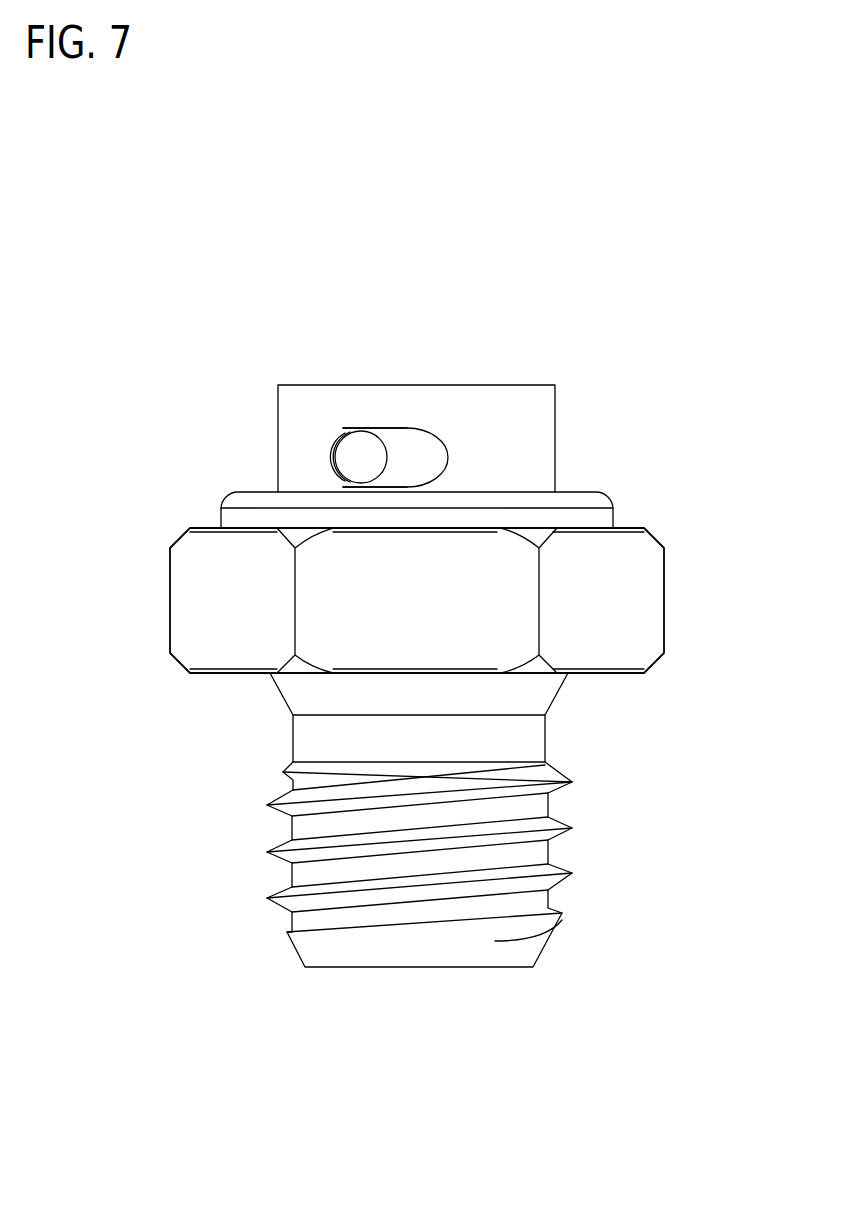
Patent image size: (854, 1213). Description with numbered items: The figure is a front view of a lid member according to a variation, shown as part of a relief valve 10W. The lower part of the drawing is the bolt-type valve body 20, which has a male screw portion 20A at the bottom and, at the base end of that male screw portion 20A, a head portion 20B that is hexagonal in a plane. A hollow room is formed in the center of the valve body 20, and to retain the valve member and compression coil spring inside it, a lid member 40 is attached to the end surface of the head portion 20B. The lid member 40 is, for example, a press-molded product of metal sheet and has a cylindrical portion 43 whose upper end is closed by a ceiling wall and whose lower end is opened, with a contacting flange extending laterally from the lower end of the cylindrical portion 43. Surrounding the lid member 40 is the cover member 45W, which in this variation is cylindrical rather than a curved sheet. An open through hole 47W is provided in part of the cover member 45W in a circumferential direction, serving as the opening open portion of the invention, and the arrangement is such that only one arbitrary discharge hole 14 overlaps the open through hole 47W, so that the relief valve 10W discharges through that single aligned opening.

The relief valve 10W is at (604, 320).
The discharge hole 14 is at (347, 447).
The cylindrical portion 43 is at (397, 460).
The open through hole 47W is at (407, 425).
The lid member 40 is at (435, 457).
The cover member 45W is at (543, 398).
The valve body 20 is at (469, 729).
The head portion 20B is at (667, 612).
The male screw portion 20A is at (560, 822).